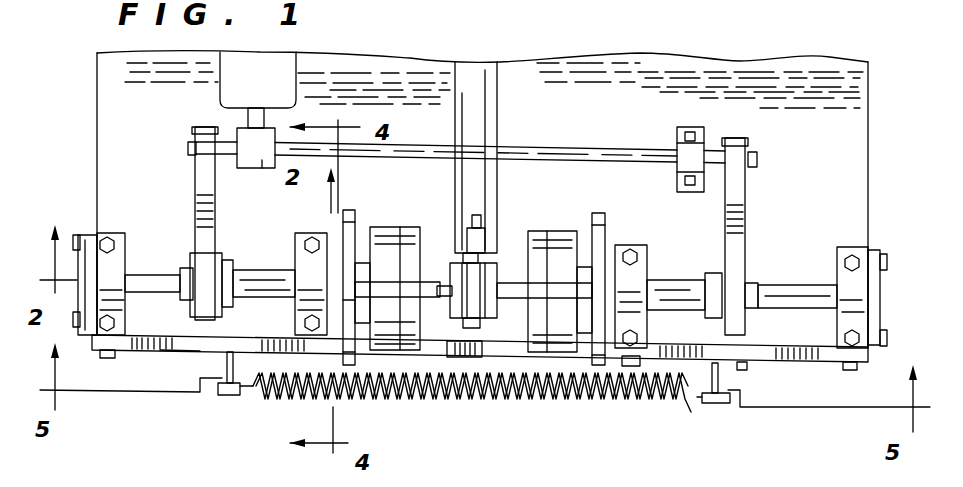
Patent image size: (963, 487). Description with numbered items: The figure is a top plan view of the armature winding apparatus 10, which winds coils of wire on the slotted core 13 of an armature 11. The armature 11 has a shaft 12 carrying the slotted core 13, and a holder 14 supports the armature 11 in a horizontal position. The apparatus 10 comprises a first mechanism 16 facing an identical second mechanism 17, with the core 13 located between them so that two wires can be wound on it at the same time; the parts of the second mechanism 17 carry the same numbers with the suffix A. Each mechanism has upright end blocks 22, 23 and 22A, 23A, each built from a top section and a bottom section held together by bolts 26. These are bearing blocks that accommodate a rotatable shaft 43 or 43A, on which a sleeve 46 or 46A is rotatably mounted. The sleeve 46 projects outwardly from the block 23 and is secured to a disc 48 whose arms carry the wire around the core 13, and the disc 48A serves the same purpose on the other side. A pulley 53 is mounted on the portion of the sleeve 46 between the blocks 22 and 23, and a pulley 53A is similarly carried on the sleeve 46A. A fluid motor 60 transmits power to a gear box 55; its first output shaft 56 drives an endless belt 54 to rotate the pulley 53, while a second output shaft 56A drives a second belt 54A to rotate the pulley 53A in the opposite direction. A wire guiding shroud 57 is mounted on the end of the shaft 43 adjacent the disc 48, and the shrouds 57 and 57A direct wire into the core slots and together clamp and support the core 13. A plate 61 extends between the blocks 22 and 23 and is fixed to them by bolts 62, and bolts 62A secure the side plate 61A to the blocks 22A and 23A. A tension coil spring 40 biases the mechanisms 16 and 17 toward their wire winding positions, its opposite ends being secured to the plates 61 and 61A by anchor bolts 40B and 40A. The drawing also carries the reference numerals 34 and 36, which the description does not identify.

The apparatus 10 is at (617, 170).
The armature 11 is at (472, 257).
The shaft 12 is at (473, 328).
The slotted core 13 is at (477, 278).
The holder 14 is at (493, 133).
The first mechanism 16 is at (82, 203).
The second mechanism 17 is at (873, 195).
The block 22 is at (124, 248).
The block 22A is at (842, 257).
The block 23 is at (305, 235).
The block 23A is at (645, 258).
The bolts 26 is at (111, 256).
The mounting flange 34 is at (85, 238).
The flange bolts 36 is at (75, 242).
The tension coil spring 40 is at (437, 400).
The anchor bolt 40A is at (722, 403).
The anchor bolt 40B is at (222, 395).
The shaft 43 is at (160, 262).
The shaft 43A is at (806, 291).
The sleeve 46 is at (255, 277).
The sleeve 46A is at (685, 280).
The disc 48 is at (347, 212).
The disc 48A is at (604, 220).
The pulley 53 is at (218, 262).
The pulley 53A is at (748, 263).
The endless belt 54 is at (205, 190).
The second belt 54A is at (735, 138).
The gear box 55 is at (262, 158).
The first output shaft 56 is at (233, 145).
The second output shaft 56A is at (567, 155).
The shroud 57 is at (393, 228).
The shroud 57A is at (553, 230).
The fluid motor 60 is at (273, 72).
The plate 61 is at (178, 352).
The side plate 61A is at (746, 364).
The bolts 62 is at (103, 356).
The bolts 62A is at (627, 367).